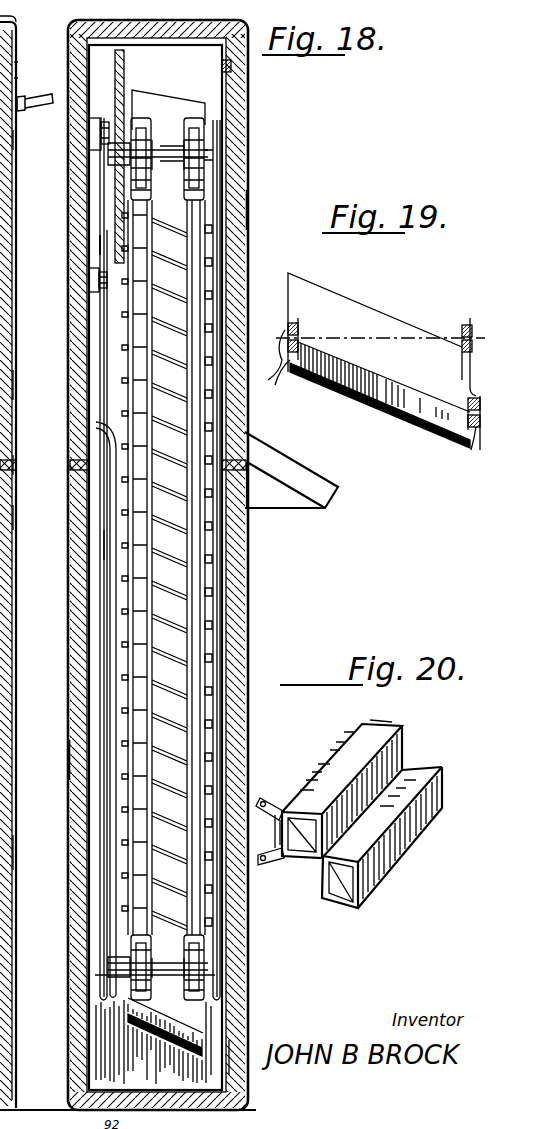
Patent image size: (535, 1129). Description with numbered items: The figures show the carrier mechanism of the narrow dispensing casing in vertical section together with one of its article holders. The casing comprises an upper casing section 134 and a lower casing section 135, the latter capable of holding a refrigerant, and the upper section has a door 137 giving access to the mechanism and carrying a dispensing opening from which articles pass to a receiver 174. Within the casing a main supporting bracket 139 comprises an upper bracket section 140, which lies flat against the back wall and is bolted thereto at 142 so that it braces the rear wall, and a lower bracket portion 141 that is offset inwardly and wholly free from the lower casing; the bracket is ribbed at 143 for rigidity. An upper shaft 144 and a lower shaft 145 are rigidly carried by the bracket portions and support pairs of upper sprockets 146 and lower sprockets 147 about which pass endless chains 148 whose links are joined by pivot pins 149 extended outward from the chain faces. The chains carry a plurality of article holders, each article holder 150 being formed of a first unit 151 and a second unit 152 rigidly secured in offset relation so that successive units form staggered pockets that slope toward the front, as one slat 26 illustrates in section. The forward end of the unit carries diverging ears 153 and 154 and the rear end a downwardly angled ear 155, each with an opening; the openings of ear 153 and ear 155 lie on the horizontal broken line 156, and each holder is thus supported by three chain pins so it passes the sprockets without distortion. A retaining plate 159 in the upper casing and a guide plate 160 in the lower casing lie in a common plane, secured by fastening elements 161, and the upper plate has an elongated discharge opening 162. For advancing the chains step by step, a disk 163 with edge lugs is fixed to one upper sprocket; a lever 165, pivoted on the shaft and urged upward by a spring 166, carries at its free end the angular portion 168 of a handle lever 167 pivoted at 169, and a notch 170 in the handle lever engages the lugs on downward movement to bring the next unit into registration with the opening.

In FIG. 18, the slat 26 is at (168, 96).
In FIG. 18, the upper casing section 134 is at (66, 208).
In FIG. 18, the lower casing section 135 is at (70, 762).
In FIG. 18, the door 137 is at (248, 216).
In FIG. 18, the main supporting bracket 139 is at (96, 344).
In FIG. 18, the upper bracket section 140 is at (100, 243).
In FIG. 18, the lower bracket portion 141 is at (103, 543).
In FIG. 18, the bolt 142 is at (92, 283).
In FIG. 18, the rib 143 is at (108, 572).
In FIG. 18, the upper shaft 144 is at (206, 162).
In FIG. 18, the lower shaft 145 is at (163, 1018).
In FIG. 18, the upper sprockets 146 is at (192, 120).
In FIG. 18, the lower sprockets 147 is at (200, 970).
In FIG. 18, the endless chains 148 is at (130, 893).
In FIG. 18, the pivot pins 149 is at (123, 648).
In FIG. 19, the article holder 150 is at (372, 307).
In FIG. 20, the article holder 150 is at (395, 729).
In FIG. 18, the first unit 151 is at (154, 567).
In FIG. 19, the first unit 151 is at (396, 322).
In FIG. 20, the first unit 151 is at (332, 765).
In FIG. 18, the second unit 152 is at (14, 518).
In FIG. 19, the second unit 152 is at (436, 420).
In FIG. 20, the second unit 152 is at (410, 843).
In FIG. 19, the forward ear 153 is at (468, 325).
In FIG. 20, the forward ear 153 is at (283, 787).
In FIG. 19, the forward ear 154 is at (476, 440).
In FIG. 20, the forward ear 154 is at (275, 866).
In FIG. 19, the rear ear 155 is at (279, 367).
In FIG. 19, the alignment line 156 is at (332, 340).
In FIG. 18, the retaining plate 159 is at (10, 244).
In FIG. 18, the guide plate 160 is at (11, 846).
In FIG. 18, the fastening elements 161 is at (16, 468).
In FIG. 18, the discharge opening 162 is at (10, 392).
In FIG. 18, the disk 163 is at (125, 58).
In FIG. 18, the lever 165 is at (100, 112).
In FIG. 18, the spring 166 is at (12, 554).
In FIG. 18, the handle lever 167 is at (28, 95).
In FIG. 18, the angular portion 168 is at (21, 82).
In FIG. 18, the pivot 169 is at (20, 67).
In FIG. 18, the notch 170 is at (18, 139).
In FIG. 18, the receiver 174 is at (332, 498).